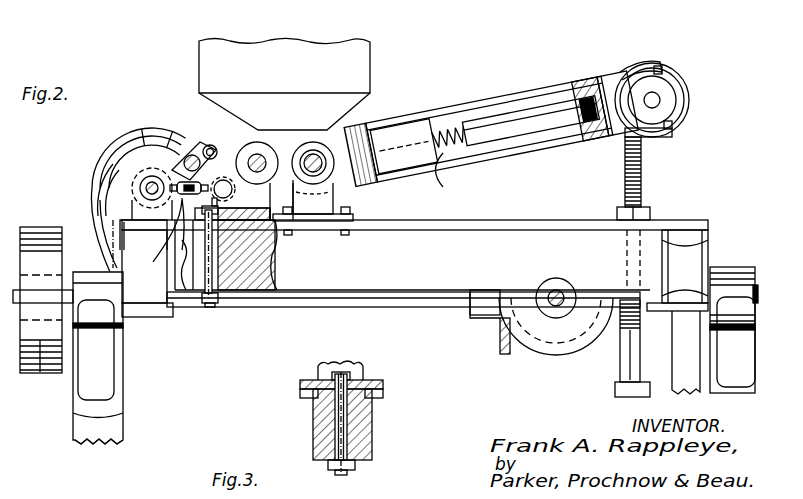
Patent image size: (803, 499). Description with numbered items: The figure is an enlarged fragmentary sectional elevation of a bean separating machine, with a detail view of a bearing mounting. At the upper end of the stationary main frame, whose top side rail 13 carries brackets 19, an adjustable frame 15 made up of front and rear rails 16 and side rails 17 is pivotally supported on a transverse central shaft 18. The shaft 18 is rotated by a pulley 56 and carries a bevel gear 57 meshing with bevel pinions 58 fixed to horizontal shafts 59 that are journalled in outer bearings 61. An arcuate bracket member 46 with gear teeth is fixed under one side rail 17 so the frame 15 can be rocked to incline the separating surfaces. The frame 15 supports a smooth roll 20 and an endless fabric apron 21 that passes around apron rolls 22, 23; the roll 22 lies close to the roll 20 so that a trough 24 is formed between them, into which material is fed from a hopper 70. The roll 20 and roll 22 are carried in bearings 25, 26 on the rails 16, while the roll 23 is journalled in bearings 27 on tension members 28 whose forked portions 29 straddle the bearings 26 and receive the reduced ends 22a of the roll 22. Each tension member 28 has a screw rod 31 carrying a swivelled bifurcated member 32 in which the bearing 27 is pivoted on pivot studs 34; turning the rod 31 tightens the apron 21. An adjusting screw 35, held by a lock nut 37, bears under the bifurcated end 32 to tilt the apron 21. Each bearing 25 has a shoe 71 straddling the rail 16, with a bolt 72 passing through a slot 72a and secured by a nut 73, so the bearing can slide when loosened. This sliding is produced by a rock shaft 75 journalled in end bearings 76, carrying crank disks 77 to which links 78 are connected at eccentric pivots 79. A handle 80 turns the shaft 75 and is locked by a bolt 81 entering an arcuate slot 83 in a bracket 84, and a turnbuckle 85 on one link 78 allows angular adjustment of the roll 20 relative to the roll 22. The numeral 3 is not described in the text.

In FIG. 2, the adjusting stud 3 is at (212, 350).
In FIG. 2, the top side rail 13 is at (110, 428).
In FIG. 2, the adjustable frame 15 is at (569, 190).
In FIG. 2, the front and rear rails 16 is at (415, 249).
In FIG. 3, the front and rear rails 16 is at (372, 429).
In FIG. 2, the side rail 17 is at (415, 273).
In FIG. 2, the transverse central shaft 18 is at (352, 308).
In FIG. 2, the bracket 19 is at (385, 335).
In FIG. 2, the roll 20 is at (241, 162).
In FIG. 2, the endless apron 21 is at (465, 103).
In FIG. 2, the apron roll 22 is at (305, 141).
In FIG. 2, the reduced end of roll 22a is at (316, 156).
In FIG. 2, the apron roll 23 is at (685, 106).
In FIG. 2, the trough 24 is at (285, 130).
In FIG. 2, the bearing 25 is at (233, 191).
In FIG. 3, the bearing 25 is at (360, 368).
In FIG. 2, the bearing 26 is at (313, 209).
In FIG. 2, the bearing 27 is at (672, 91).
In FIG. 2, the tension member 28 is at (452, 174).
In FIG. 2, the forked portion 29 is at (362, 123).
In FIG. 2, the screw rod 31 is at (539, 114).
In FIG. 2, the bifurcated member 32 is at (627, 71).
In FIG. 2, the pivot stud 34 is at (664, 73).
In FIG. 2, the adjusting screw 35 is at (645, 172).
In FIG. 2, the lock nut 37 is at (650, 212).
In FIG. 2, the arcuate bracket member 46 is at (686, 352).
In FIG. 2, the pulley 56 is at (43, 355).
In FIG. 2, the bevel gear 57 is at (505, 353).
In FIG. 2, the bevel pinion 58 is at (562, 343).
In FIG. 2, the horizontal shaft 59 is at (563, 291).
In FIG. 2, the outer bearing 61 is at (549, 282).
In FIG. 2, the hopper 70 is at (284, 65).
In FIG. 3, the shoe 71 is at (383, 387).
In FIG. 2, the bolt 72 is at (220, 305).
In FIG. 3, the bolt 72 is at (345, 401).
In FIG. 2, the slot 72a is at (203, 268).
In FIG. 3, the slot 72a is at (337, 433).
In FIG. 2, the nut 73 is at (204, 306).
In FIG. 3, the nut 73 is at (337, 471).
In FIG. 2, the rock shaft 75 is at (146, 189).
In FIG. 2, the end bearing 76 is at (147, 216).
In FIG. 2, the crank disk 77 is at (140, 186).
In FIG. 2, the link 78 is at (157, 258).
In FIG. 2, the pivot 79 is at (146, 181).
In FIG. 2, the handle 80 is at (211, 145).
In FIG. 2, the bolt 81 is at (193, 155).
In FIG. 2, the arcuate slot 83 is at (140, 130).
In FIG. 2, the bracket 84 is at (96, 203).
In FIG. 2, the turnbuckle 85 is at (172, 132).